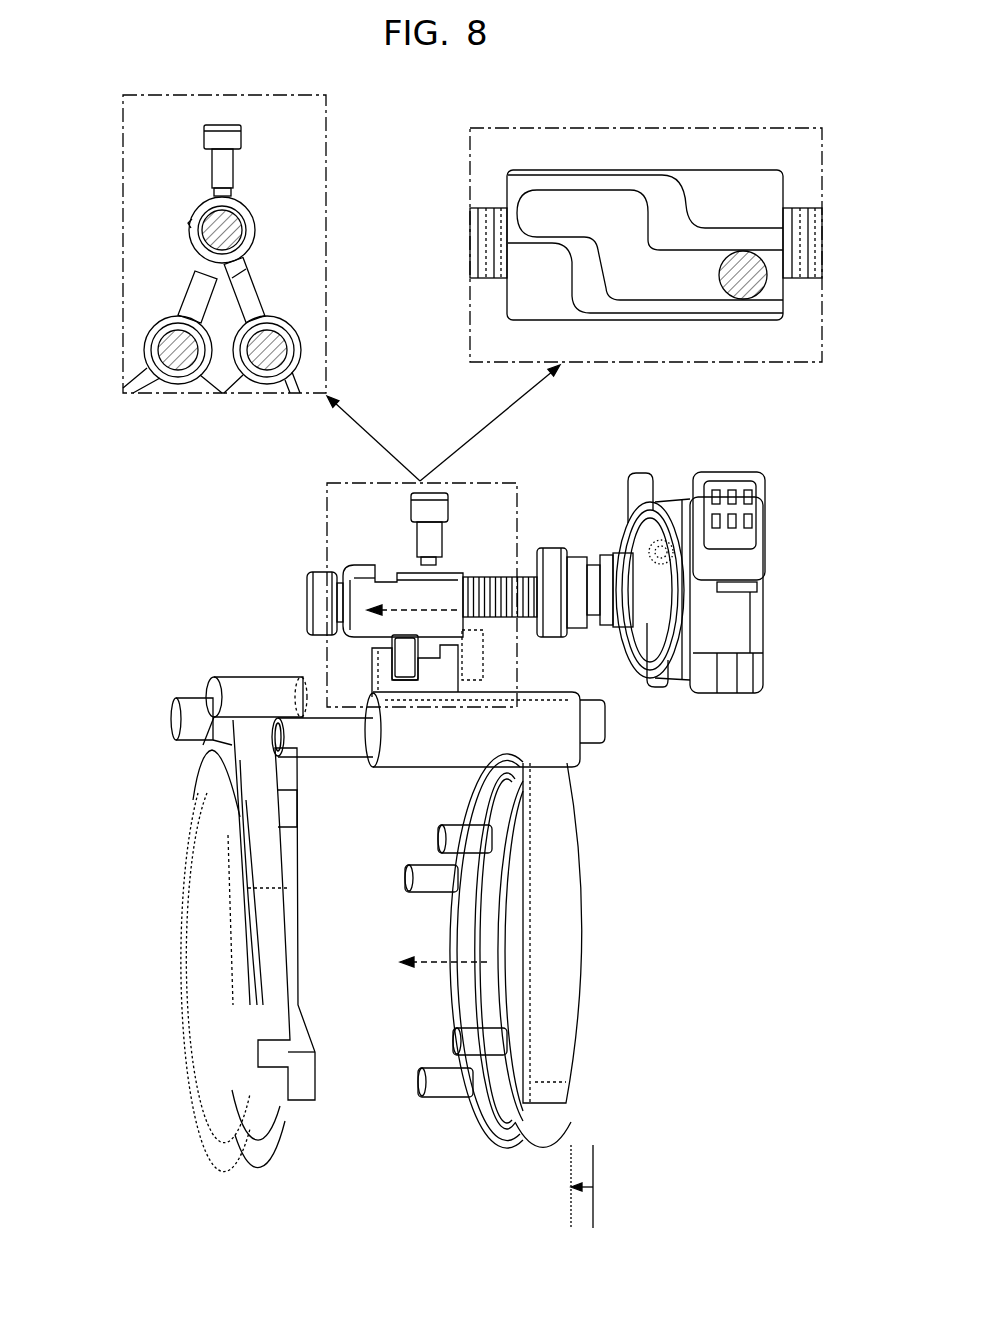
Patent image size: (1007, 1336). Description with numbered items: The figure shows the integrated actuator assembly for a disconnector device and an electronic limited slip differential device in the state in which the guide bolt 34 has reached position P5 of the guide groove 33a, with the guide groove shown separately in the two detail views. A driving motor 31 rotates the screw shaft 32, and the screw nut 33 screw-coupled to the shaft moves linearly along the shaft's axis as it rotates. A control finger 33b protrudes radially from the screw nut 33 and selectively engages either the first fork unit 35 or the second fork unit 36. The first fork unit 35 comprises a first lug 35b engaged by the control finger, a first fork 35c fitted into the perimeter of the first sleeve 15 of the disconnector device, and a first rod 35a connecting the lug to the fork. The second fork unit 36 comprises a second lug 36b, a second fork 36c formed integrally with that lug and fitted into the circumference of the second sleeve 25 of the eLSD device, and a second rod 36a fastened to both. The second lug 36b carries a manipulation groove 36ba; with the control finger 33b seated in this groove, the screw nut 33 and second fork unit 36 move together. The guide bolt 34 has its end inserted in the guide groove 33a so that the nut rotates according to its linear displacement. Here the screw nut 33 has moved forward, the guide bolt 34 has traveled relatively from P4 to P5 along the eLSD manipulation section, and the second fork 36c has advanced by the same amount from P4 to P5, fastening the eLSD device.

The first sleeve 15 is at (203, 1130).
The second sleeve 25 is at (560, 1115).
The driving motor 31 is at (735, 605).
The screw shaft 32 is at (240, 203).
The screw nut 33 is at (205, 195).
The guide groove 33a is at (580, 212).
The control finger 33b is at (243, 260).
The guide bolt 34 is at (205, 130).
The first fork unit 35 is at (152, 712).
The first rod 35a is at (173, 340).
The first lug 35b is at (197, 293).
The first fork 35c is at (128, 372).
The second fork unit 36 is at (597, 828).
The second rod 36a is at (273, 340).
The second lug 36b is at (253, 303).
The manipulation groove 36ba is at (480, 648).
The second fork 36c is at (300, 382).
The position P4 is at (596, 1202).
The position P5 is at (560, 1202).